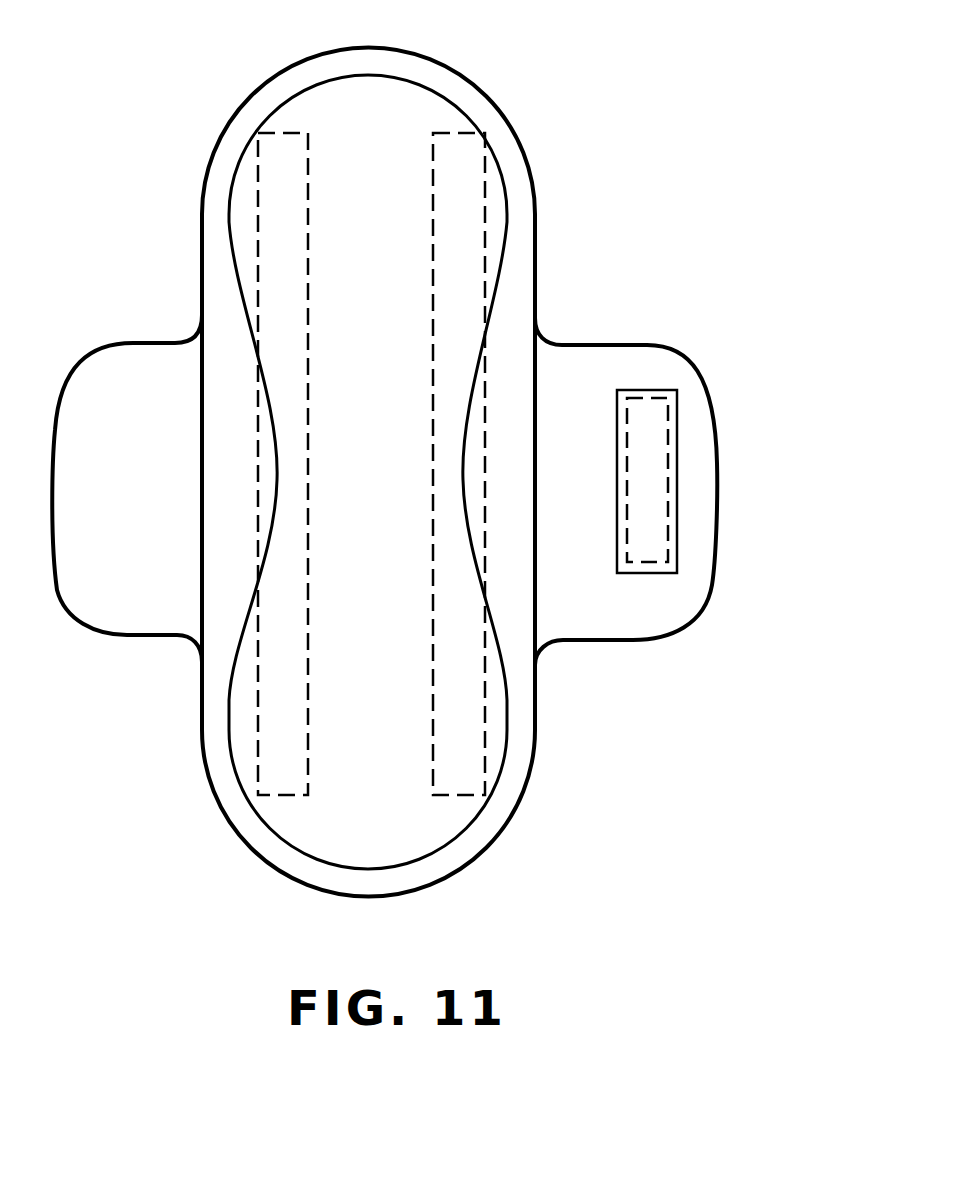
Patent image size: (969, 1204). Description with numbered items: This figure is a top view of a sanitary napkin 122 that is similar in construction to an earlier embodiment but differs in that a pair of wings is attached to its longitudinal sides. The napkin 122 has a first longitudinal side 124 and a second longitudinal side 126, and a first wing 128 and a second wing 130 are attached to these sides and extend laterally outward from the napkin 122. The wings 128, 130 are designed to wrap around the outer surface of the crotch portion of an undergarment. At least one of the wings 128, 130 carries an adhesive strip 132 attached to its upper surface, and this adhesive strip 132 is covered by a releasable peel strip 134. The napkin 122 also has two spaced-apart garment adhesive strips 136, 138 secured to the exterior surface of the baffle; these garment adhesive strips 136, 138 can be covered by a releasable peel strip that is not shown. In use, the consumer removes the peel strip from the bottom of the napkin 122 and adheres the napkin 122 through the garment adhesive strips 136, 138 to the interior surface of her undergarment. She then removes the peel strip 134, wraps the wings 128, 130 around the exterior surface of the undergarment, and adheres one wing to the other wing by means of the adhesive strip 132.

The sanitary napkin 122 is at (670, 87).
The longitudinal side 124 is at (202, 241).
The longitudinal side 126 is at (536, 244).
The wing 128 is at (132, 365).
The wing 130 is at (594, 375).
The adhesive strip 132 is at (668, 463).
The releasable peel strip 134 is at (680, 543).
The garment adhesive strip 136 is at (303, 133).
The garment adhesive strip 138 is at (452, 130).